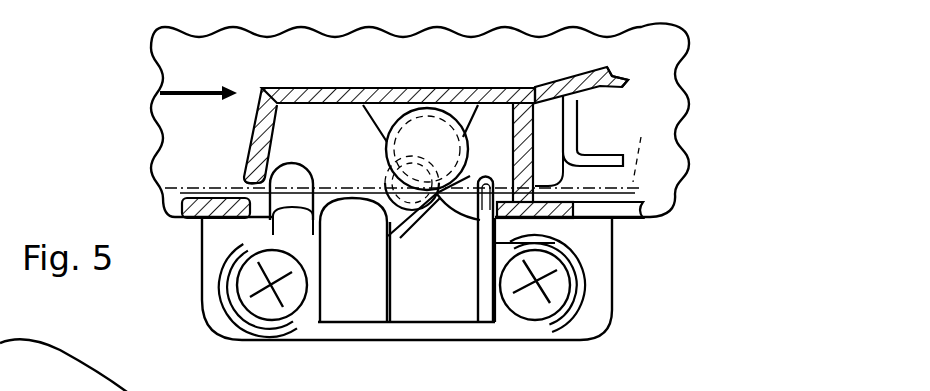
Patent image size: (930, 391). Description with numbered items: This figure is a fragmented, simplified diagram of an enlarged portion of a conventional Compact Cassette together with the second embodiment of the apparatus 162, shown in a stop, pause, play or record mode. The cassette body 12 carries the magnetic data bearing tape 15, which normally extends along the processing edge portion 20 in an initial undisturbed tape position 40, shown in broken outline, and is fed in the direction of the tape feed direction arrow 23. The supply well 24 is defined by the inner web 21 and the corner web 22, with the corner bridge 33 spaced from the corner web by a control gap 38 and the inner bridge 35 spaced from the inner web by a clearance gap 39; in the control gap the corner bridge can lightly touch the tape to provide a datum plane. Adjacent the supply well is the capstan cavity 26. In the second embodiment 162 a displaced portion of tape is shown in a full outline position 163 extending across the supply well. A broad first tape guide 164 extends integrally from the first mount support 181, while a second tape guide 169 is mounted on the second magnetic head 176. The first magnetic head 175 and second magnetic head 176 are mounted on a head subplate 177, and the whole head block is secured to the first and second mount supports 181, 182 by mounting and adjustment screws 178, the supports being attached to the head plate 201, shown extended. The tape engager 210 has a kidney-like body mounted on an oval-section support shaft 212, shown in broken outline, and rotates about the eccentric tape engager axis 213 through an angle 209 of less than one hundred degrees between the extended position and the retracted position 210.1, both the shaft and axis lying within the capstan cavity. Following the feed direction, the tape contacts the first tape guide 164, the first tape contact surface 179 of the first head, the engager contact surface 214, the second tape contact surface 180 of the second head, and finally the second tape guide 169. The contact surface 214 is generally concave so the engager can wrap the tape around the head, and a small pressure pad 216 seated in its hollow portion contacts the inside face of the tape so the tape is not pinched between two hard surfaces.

The cassette body 12 is at (562, 72).
The magnetic data bearing tape 15 is at (194, 184).
The processing edge portion 20 is at (623, 231).
The inner web 21 is at (557, 228).
The corner web 22 is at (197, 222).
The tape feed direction arrow 23 is at (178, 78).
The supply well 24 is at (315, 90).
The capstan cavity 26 is at (480, 162).
The corner bridge 33 is at (253, 150).
The inner bridge 35 is at (530, 164).
The control gap 38 is at (243, 182).
The clearance gap 39 is at (571, 120).
The undisturbed tape position 40 is at (630, 138).
The second embodiment of the apparatus 162 is at (622, 322).
The displaced tape position 163 is at (483, 215).
The first tape guide 164 is at (297, 158).
The second tape guide 169 is at (528, 94).
The first magnetic head 175 is at (345, 284).
The second magnetic head 176 is at (398, 304).
The head subplate 177 is at (303, 304).
The mounting and adjustment screws 178 is at (263, 304).
The first tape contact surface 179 is at (349, 203).
The second tape contact surface 180 is at (466, 206).
The first mount support 181 is at (217, 303).
The second mount support 182 is at (506, 327).
The head plate 201 is at (598, 333).
The rotation angle 209 is at (425, 96).
The tape engager 210 is at (385, 172).
The retracted position of tape engager 210.1 is at (427, 80).
The support shaft 212 is at (302, 109).
The tape engager axis 213 is at (465, 110).
The engager contact surface 214 is at (387, 190).
The pressure pad 216 is at (430, 204).